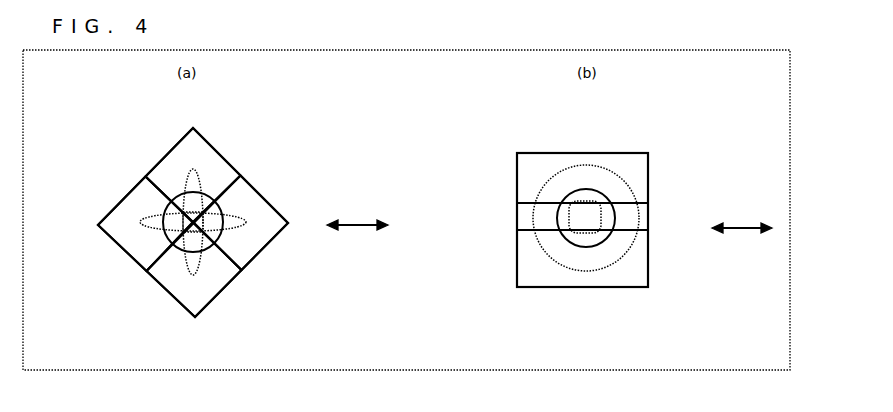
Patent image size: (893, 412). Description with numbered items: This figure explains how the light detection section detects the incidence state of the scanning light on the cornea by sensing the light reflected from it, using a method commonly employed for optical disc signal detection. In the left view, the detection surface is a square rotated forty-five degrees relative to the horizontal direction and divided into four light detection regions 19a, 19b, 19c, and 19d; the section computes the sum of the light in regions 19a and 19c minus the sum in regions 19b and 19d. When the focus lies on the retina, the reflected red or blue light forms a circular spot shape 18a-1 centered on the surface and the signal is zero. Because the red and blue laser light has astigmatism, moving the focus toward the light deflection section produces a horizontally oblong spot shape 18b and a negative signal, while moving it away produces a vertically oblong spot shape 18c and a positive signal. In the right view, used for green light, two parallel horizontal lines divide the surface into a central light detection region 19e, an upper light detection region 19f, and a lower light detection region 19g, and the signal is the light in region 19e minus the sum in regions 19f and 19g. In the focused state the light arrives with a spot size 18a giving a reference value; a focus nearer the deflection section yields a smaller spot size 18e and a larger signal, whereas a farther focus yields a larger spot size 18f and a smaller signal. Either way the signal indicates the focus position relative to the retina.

The light detection region 19a is at (185, 163).
The light detection region 19b is at (132, 232).
The light detection region 19c is at (190, 297).
The light detection region 19d is at (247, 211).
The central light detection region 19e is at (525, 217).
The upper light detection region 19f is at (530, 168).
The lower light detection region 19g is at (537, 265).
The circular spot shape 18a-1 is at (208, 195).
The spot size 18a is at (607, 193).
The horizontally oblong spot shape 18b is at (238, 230).
The vertically oblong spot shape 18c is at (187, 262).
The spot size 18e is at (603, 218).
The spot size 18f is at (622, 257).